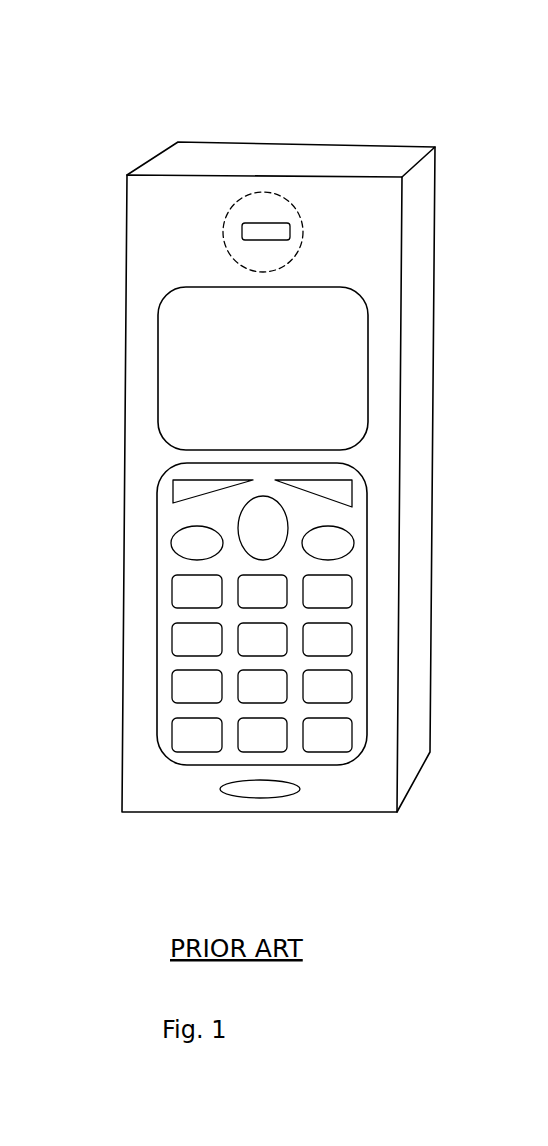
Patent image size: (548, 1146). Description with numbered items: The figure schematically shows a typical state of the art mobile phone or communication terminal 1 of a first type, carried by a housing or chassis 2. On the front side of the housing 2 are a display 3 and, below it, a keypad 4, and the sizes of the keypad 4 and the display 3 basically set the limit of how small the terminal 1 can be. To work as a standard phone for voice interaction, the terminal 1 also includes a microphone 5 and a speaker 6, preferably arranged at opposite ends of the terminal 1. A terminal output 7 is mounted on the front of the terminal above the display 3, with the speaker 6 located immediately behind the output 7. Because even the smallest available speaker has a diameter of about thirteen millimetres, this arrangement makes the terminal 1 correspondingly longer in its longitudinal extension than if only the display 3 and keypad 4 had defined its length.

The communication terminal 1 is at (243, 448).
The housing 2 is at (143, 287).
The display 3 is at (266, 375).
The keypad 4 is at (167, 523).
The microphone 5 is at (243, 798).
The speaker 6 is at (305, 230).
The terminal output 7 is at (240, 223).